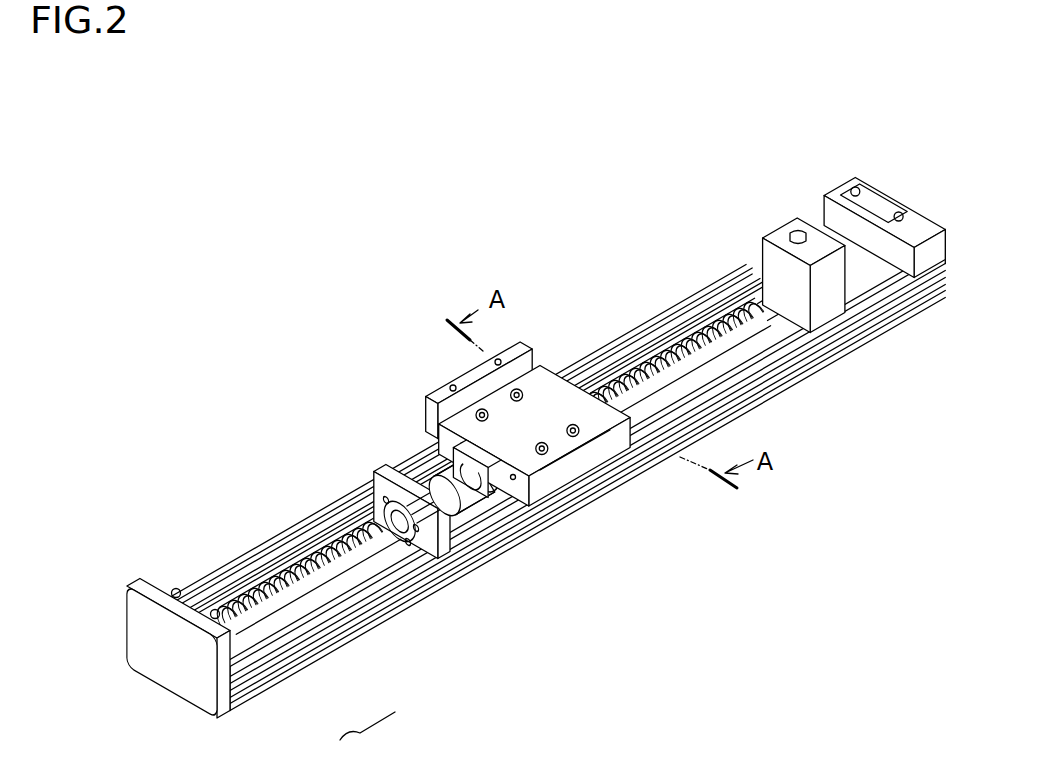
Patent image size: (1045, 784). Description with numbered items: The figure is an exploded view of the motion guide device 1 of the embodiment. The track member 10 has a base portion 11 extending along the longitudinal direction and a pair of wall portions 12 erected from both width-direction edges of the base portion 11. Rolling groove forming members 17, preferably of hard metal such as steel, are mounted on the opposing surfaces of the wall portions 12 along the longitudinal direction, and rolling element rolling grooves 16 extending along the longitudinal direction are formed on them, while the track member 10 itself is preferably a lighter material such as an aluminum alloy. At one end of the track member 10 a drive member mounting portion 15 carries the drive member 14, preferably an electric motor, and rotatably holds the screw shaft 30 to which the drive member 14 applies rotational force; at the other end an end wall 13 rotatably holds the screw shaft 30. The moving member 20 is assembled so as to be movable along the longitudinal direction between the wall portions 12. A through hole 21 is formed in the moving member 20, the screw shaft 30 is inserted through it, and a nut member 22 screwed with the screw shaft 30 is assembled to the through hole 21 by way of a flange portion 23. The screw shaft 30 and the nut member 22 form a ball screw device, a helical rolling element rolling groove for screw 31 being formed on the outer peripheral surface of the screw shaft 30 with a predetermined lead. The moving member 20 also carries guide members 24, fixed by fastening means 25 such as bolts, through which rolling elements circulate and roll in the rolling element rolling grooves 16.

The actuator 1 is at (862, 102).
The track member 10 is at (372, 735).
The base portion 11 is at (313, 605).
The wall portions 12 is at (258, 547).
The end wall 13 is at (178, 673).
The drive member 14 is at (870, 213).
The drive member mounting portion 15 is at (796, 222).
The rolling element rolling grooves 16 is at (343, 517).
The rolling groove forming members 17 is at (302, 552).
The moving member 20 is at (513, 353).
The through hole 21 is at (447, 463).
The nut member 22 is at (460, 503).
The flange portion 23 is at (440, 532).
The guide members 24 is at (517, 500).
The fastening means 25 is at (519, 392).
The screw shaft 30 is at (732, 330).
The rolling element rolling groove for screw 31 is at (683, 357).